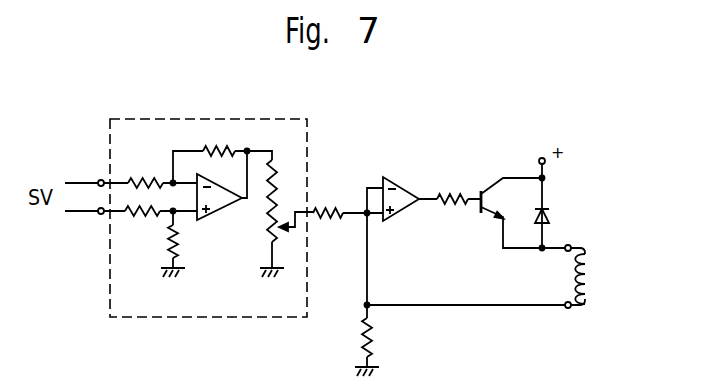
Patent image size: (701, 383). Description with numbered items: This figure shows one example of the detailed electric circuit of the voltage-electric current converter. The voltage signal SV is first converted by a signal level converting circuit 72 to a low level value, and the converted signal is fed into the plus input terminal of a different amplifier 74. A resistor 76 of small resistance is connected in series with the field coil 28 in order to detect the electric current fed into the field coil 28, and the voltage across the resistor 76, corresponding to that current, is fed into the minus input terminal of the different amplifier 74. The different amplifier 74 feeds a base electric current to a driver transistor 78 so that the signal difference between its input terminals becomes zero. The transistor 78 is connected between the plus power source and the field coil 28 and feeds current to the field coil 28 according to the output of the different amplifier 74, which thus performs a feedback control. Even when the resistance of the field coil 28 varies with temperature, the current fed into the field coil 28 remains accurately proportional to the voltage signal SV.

The signal level converting circuit 72 is at (210, 118).
The different amplifier 74 is at (408, 192).
The resistor 76 is at (374, 336).
The driver transistor 78 is at (481, 193).
The field coil 28 is at (588, 257).